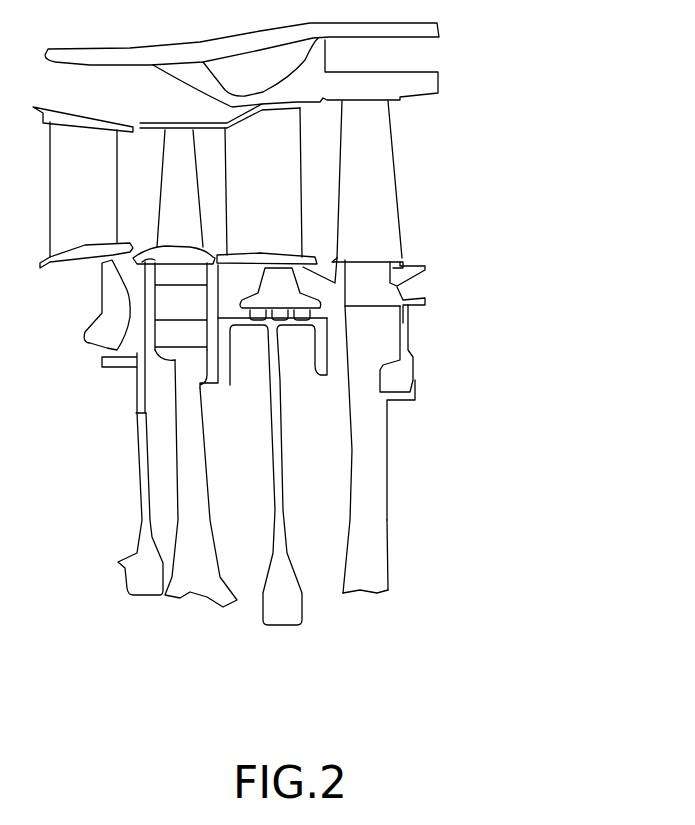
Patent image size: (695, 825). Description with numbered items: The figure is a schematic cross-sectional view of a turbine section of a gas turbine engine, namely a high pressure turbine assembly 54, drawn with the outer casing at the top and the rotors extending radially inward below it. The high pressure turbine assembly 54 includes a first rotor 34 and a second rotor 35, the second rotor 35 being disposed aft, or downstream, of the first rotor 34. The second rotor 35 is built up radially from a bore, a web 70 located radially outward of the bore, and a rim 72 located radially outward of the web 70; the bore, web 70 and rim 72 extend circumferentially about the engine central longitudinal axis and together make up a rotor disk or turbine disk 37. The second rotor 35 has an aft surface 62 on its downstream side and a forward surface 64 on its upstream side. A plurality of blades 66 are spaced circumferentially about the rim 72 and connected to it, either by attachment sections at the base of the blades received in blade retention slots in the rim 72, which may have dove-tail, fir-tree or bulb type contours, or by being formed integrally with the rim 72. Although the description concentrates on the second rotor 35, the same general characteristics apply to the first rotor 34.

The high pressure turbine assembly 54 is at (505, 59).
The blades 66 is at (375, 182).
The rim 72 is at (385, 325).
The turbine disk 37 is at (428, 435).
The forward surface 64 is at (337, 453).
The aft surface 62 is at (413, 476).
The web 70 is at (387, 522).
The second rotor 35 is at (367, 578).
The first rotor 34 is at (193, 587).